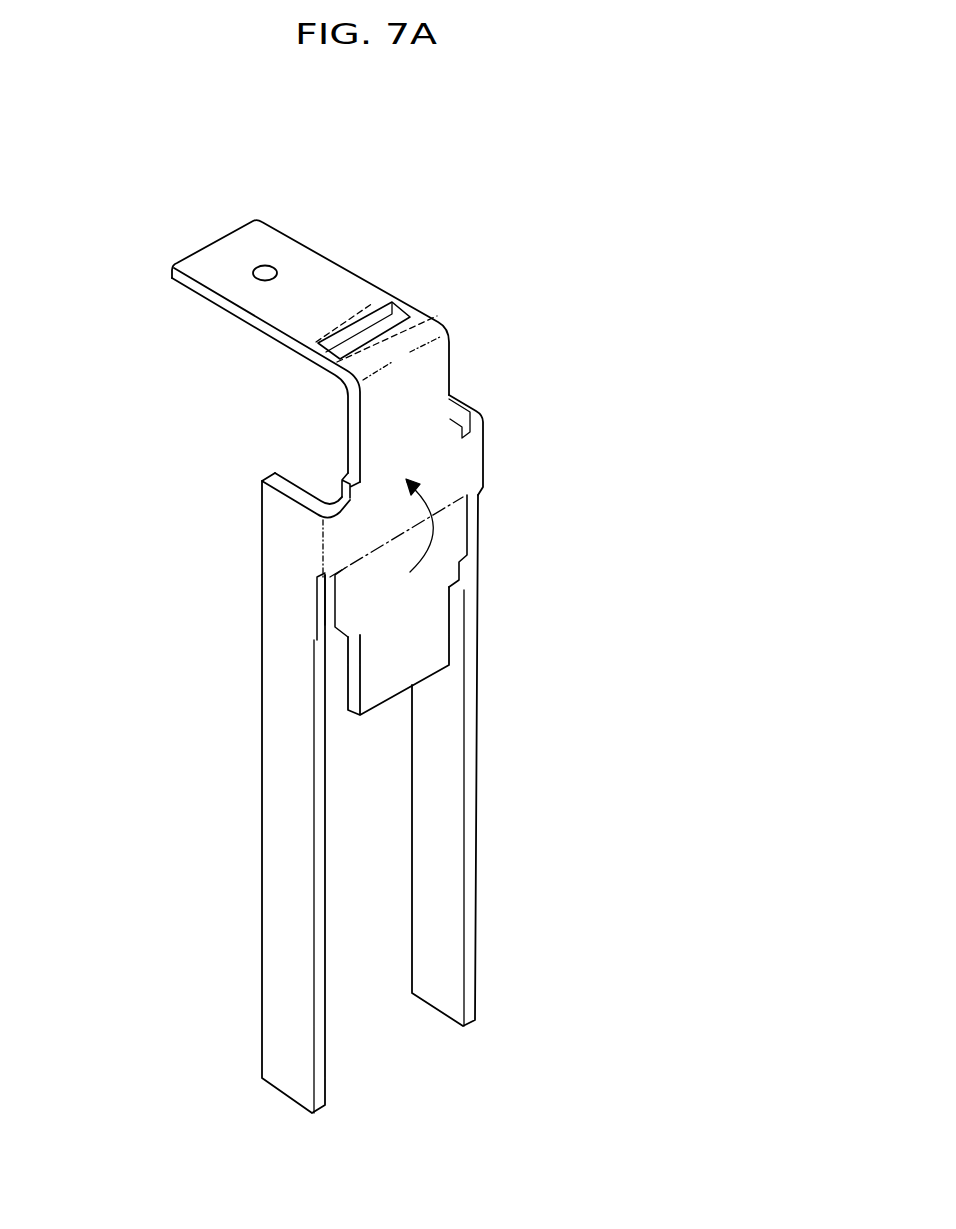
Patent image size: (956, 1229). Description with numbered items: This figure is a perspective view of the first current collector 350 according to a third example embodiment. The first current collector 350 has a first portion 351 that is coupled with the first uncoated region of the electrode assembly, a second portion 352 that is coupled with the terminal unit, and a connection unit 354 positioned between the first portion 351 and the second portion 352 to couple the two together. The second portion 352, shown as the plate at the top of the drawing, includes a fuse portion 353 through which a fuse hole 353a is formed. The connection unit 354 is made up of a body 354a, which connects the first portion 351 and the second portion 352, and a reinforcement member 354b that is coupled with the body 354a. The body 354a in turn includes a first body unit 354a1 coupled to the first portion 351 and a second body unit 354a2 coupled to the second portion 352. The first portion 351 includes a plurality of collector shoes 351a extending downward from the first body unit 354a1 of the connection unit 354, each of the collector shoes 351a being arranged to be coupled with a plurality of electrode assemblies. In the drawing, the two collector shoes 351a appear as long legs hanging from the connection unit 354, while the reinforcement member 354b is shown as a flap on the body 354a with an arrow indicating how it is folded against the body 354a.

The first current collector 350 is at (502, 277).
The first portion 351 is at (490, 756).
The collector shoes 351a is at (320, 842).
The second portion 352 is at (277, 247).
The fuse portion 353 is at (361, 318).
The fuse hole 353a is at (360, 321).
The connection unit 354 is at (641, 380).
The body 354a is at (111, 537).
The first body unit 354a1 is at (343, 535).
The second body unit 354a2 is at (390, 433).
The reinforcement member 354b is at (423, 638).